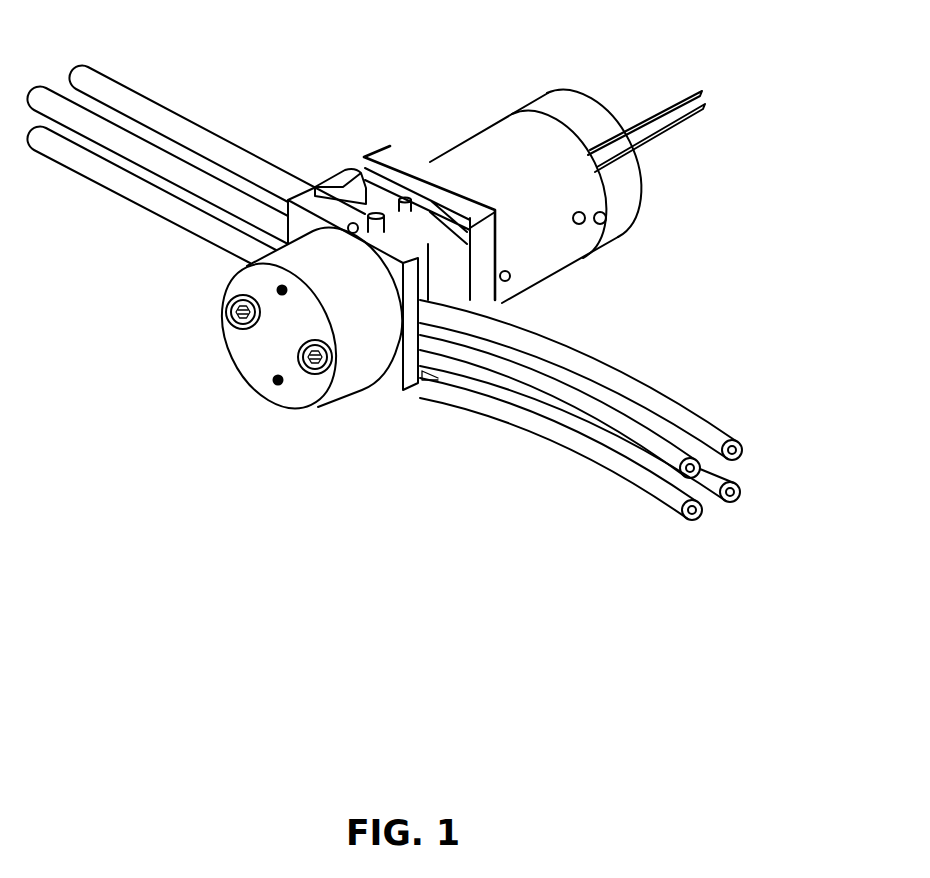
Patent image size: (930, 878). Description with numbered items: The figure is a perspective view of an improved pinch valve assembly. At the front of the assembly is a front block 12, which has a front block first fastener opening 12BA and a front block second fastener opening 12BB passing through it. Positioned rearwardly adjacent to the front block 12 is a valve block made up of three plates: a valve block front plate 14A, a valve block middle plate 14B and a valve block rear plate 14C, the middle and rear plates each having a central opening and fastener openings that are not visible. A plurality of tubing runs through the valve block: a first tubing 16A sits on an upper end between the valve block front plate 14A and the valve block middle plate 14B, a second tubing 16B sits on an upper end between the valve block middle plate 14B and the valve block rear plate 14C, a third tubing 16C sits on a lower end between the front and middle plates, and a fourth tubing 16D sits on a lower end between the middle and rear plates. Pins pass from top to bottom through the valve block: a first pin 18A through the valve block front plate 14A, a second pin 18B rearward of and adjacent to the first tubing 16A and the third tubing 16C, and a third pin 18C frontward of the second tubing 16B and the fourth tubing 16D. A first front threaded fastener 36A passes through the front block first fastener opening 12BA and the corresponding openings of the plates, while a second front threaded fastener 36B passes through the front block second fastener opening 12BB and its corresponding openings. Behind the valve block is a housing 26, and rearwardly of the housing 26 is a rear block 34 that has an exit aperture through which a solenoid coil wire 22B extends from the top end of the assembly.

The front block 12 is at (343, 382).
The front block first fastener opening 12BA is at (227, 299).
The front block second fastener opening 12BB is at (311, 372).
The valve block front plate 14A is at (412, 384).
The valve block middle plate 14B is at (336, 168).
The valve block rear plate 14C is at (385, 152).
The first tubing 16A is at (643, 437).
The second tubing 16B is at (742, 438).
The third tubing 16C is at (700, 513).
The fourth tubing 16D is at (741, 490).
The first pin 18A is at (320, 188).
The second pin 18B is at (407, 197).
The third pin 18C is at (375, 212).
The solenoid coil wire 22B is at (675, 120).
The housing 26 is at (547, 250).
The rear block 34 is at (622, 217).
The first front threaded fastener 36A is at (226, 312).
The second front threaded fastener 36B is at (298, 357).